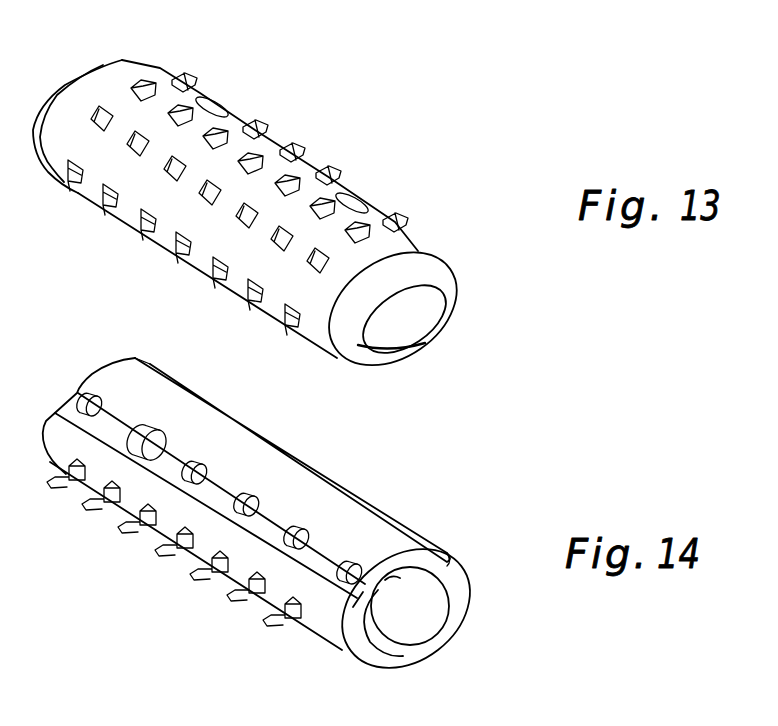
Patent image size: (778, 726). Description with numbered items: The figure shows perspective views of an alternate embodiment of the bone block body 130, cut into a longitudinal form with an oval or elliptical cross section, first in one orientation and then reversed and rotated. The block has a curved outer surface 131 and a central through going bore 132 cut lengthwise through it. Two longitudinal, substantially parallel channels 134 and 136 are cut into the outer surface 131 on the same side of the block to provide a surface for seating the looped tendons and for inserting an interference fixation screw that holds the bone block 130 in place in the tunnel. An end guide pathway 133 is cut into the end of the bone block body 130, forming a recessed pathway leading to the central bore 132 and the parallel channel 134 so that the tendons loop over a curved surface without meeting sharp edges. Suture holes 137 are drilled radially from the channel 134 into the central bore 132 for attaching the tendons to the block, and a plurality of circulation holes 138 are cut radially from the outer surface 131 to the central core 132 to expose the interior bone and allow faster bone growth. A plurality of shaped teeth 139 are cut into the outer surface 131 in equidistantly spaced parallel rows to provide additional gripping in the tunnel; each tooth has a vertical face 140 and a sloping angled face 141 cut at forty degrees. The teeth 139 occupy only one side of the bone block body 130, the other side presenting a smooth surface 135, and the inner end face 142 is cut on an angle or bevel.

In FIG. 13, the bone block body 130 is at (337, 115).
In FIG. 14, the bone block body 130 is at (192, 593).
In FIG. 13, the curved outer surface 131 is at (456, 300).
In FIG. 13, the central through going bore 132 is at (404, 330).
In FIG. 14, the central through going bore 132 is at (421, 611).
In FIG. 14, the end guide pathway 133 is at (333, 646).
In FIG. 14, the longitudinal channel 134 is at (177, 520).
In FIG. 14, the smooth surface 135 is at (150, 403).
In FIG. 14, the longitudinal channel 136 is at (442, 547).
In FIG. 14, the suture holes 137 is at (158, 440).
In FIG. 14, the circulation holes 138 is at (250, 493).
In FIG. 13, the shaped teeth 139 is at (168, 252).
In FIG. 13, the vertical face 140 is at (409, 227).
In FIG. 13, the sloping angled face 141 is at (393, 212).
In FIG. 13, the inner end face 142 is at (89, 66).